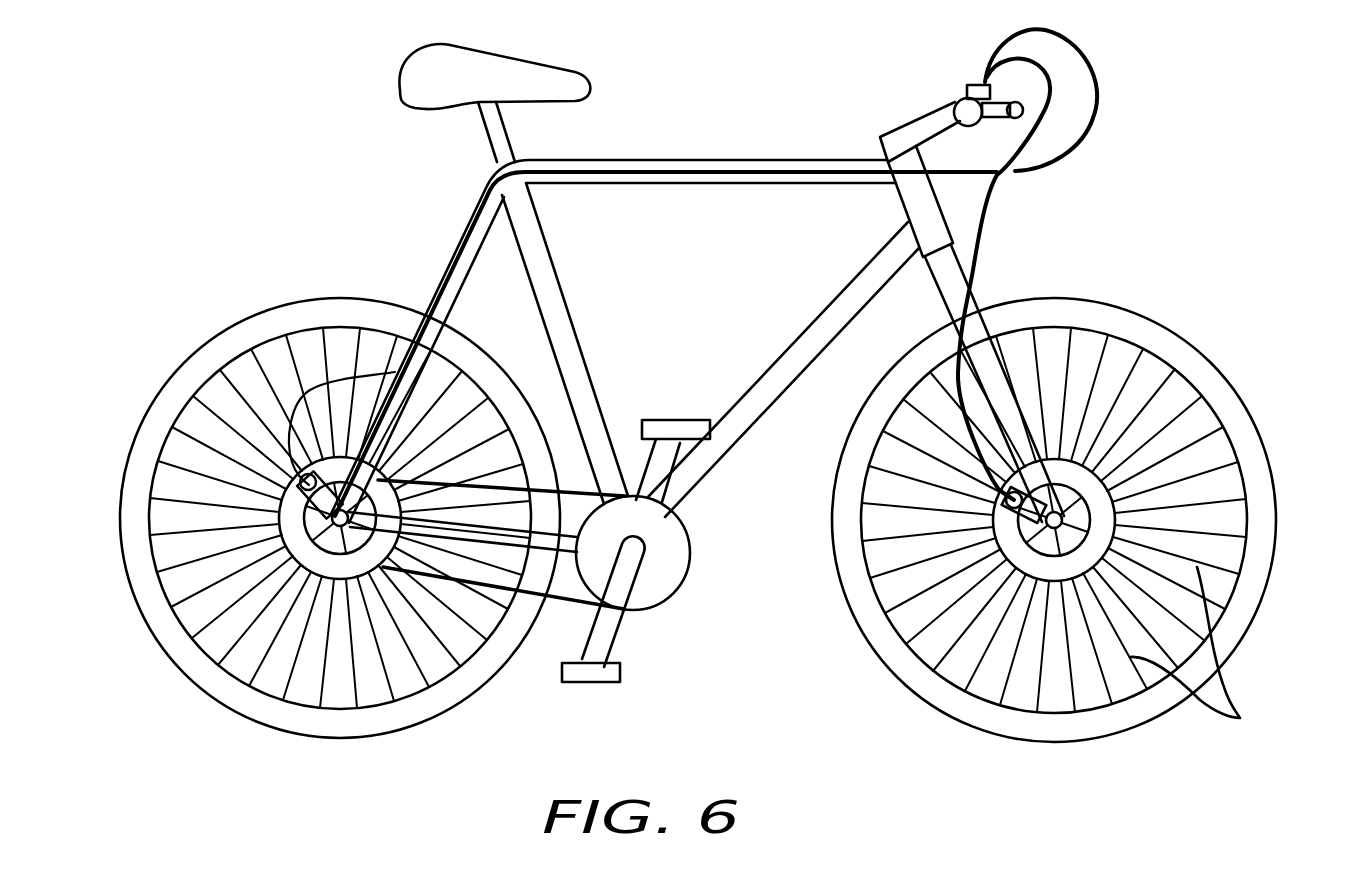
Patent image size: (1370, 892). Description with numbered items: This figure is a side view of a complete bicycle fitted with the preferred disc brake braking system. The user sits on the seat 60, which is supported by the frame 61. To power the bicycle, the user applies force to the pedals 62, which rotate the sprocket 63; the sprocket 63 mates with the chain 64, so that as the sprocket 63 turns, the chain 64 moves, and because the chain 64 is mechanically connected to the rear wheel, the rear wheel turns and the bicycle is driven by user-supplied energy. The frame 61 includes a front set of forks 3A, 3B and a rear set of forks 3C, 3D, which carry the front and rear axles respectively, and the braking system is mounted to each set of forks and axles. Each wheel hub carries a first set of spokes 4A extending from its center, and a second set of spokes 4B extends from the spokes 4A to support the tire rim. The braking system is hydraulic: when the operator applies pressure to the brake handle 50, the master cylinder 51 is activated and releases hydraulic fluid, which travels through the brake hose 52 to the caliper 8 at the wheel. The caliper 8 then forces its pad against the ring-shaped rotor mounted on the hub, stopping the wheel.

The caliper 8 is at (320, 505).
The front fork 3A is at (1097, 384).
The front fork 3B is at (965, 310).
The rear fork 3C is at (583, 345).
The rear fork 3D is at (447, 255).
The first set of spokes 4A is at (1062, 500).
The second set of spokes 4B is at (1240, 718).
The brake handle 50 is at (1025, 100).
The master cylinder 51 is at (978, 85).
The brake hose 52 is at (988, 218).
The seat 60 is at (418, 50).
The frame 61 is at (625, 160).
The pedals 62 is at (680, 420).
The sprocket 63 is at (660, 573).
The chain 64 is at (533, 658).